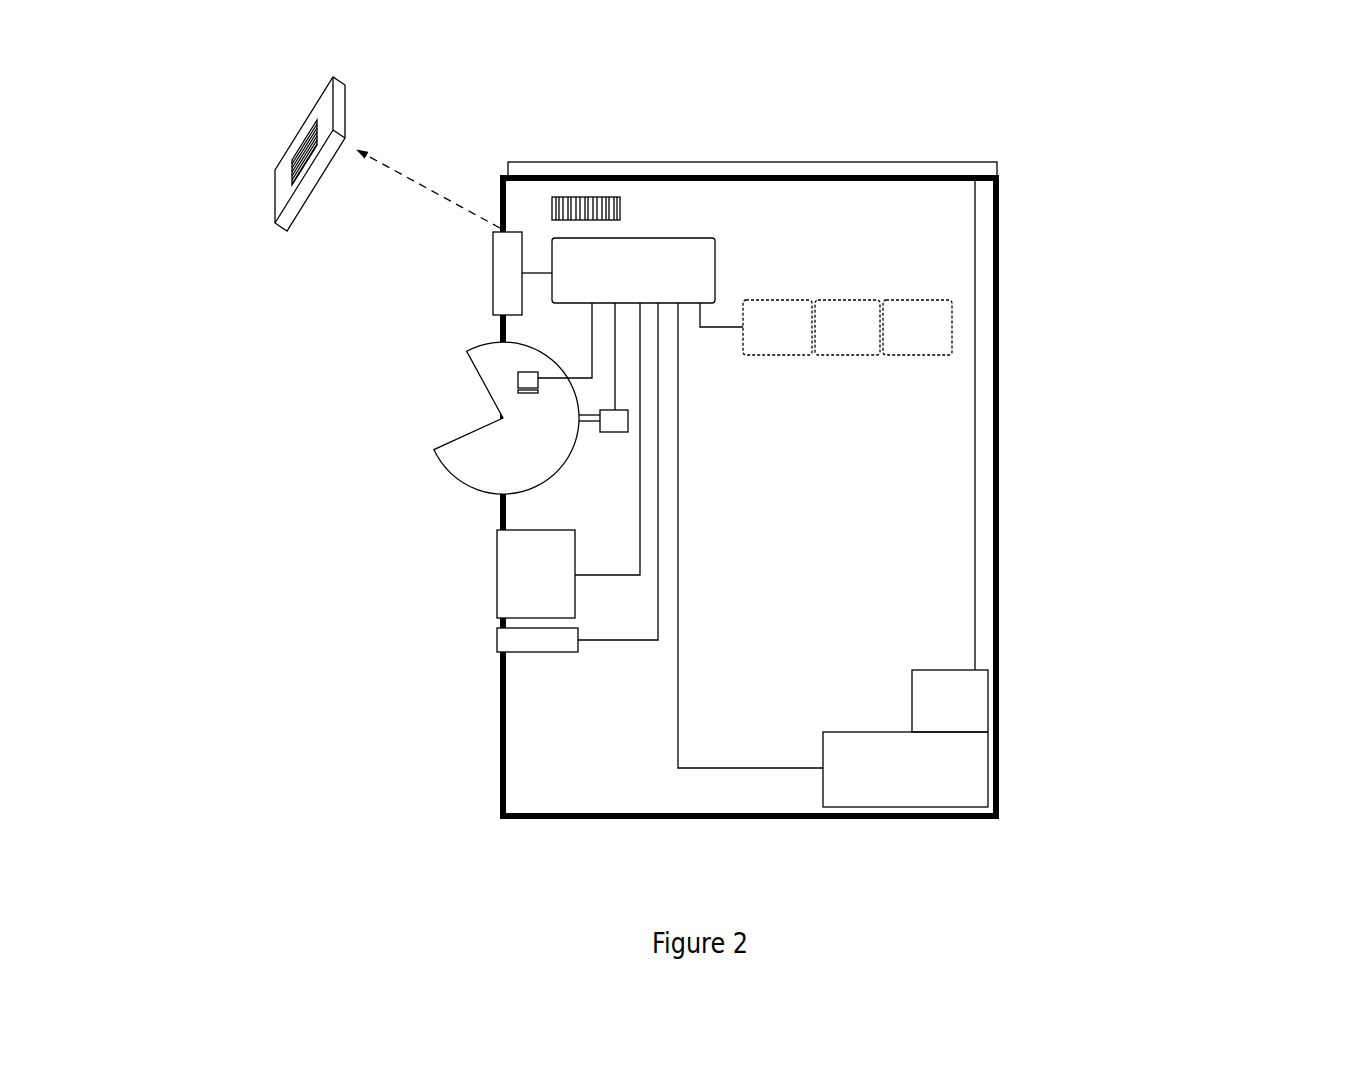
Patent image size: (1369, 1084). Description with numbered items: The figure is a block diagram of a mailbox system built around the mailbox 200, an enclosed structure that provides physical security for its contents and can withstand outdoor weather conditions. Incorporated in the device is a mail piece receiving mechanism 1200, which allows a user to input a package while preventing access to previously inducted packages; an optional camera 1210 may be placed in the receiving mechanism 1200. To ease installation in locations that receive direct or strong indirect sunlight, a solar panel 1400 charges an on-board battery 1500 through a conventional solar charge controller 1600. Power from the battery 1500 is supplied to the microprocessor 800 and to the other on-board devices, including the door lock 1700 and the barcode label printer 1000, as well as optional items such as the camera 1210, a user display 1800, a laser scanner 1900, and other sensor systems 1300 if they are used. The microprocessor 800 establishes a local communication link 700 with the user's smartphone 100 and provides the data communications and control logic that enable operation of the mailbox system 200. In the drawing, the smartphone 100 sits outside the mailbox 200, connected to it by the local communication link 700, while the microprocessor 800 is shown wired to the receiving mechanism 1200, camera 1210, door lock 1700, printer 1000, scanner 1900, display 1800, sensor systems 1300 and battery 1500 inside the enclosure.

The smartphone 100 is at (312, 104).
The mailbox 200 is at (1002, 257).
The local communication link 700 is at (458, 202).
The microprocessor 800 is at (630, 268).
The barcode label printer 1000 is at (492, 577).
The mail piece receiving mechanism 1200 is at (430, 481).
The camera 1210 is at (508, 390).
The other sensor systems 1300 is at (905, 370).
The solar panel 1400 is at (900, 160).
The battery 1500 is at (963, 777).
The solar charge controller 1600 is at (963, 710).
The door lock 1700 is at (633, 432).
The user display 1800 is at (480, 276).
The laser scanner 1900 is at (483, 657).